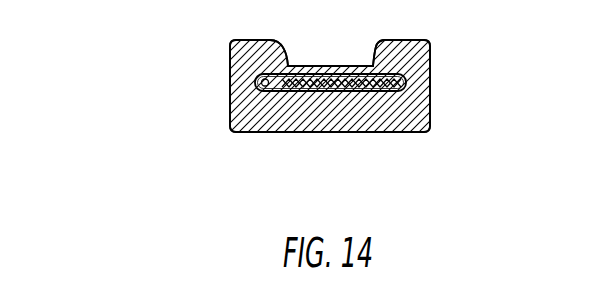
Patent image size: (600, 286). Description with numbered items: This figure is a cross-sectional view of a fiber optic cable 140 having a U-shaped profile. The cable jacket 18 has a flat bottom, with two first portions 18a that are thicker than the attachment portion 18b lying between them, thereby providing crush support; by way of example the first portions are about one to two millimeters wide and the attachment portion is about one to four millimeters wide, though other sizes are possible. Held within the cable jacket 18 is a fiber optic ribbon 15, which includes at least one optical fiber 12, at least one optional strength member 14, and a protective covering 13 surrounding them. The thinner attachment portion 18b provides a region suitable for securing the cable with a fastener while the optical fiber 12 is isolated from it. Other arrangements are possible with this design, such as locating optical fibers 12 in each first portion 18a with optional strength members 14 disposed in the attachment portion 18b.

The optical fiber 12 is at (275, 69).
The protective covering 13 is at (287, 66).
The strength member 14 is at (404, 88).
The fiber optic ribbon 15 is at (421, 45).
The cable jacket 18 is at (330, 122).
The first portion 18a is at (232, 148).
The attachment portion 18b is at (289, 148).
The fiber optic cable 140 is at (192, 85).